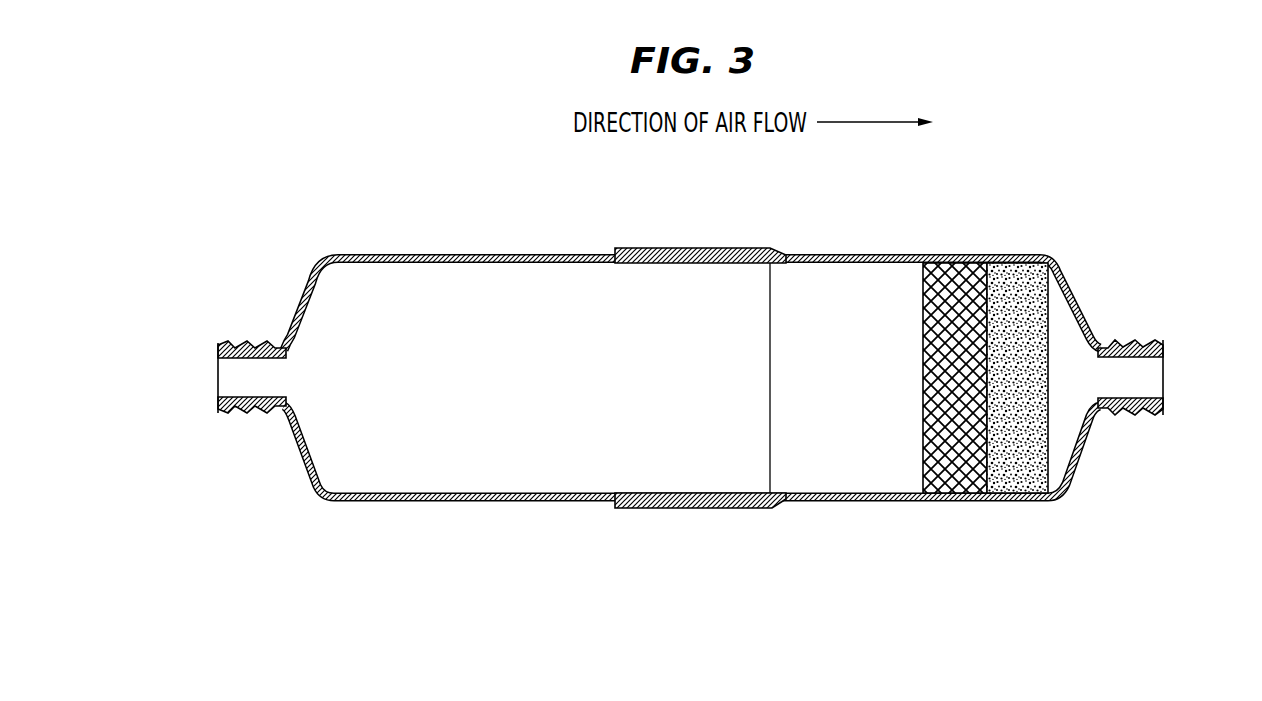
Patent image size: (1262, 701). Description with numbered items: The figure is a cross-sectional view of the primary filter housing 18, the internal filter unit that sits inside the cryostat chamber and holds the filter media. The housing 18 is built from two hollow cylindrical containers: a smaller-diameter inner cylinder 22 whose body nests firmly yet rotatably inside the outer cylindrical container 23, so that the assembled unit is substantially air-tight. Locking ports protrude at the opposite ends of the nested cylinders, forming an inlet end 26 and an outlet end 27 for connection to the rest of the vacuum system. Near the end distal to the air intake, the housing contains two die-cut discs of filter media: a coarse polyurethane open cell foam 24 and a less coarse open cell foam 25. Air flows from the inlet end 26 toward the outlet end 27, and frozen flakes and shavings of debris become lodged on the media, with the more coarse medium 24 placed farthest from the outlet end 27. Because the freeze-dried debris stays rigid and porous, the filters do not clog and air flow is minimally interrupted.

The primary filter housing 18 is at (1162, 542).
The inner cylindrical container 22 is at (501, 254).
The outer cylindrical container 23 is at (693, 250).
The coarse filter medium 24 is at (953, 267).
The less coarse filter medium 25 is at (1023, 280).
The inlet end 26 is at (218, 380).
The outlet end 27 is at (1163, 380).